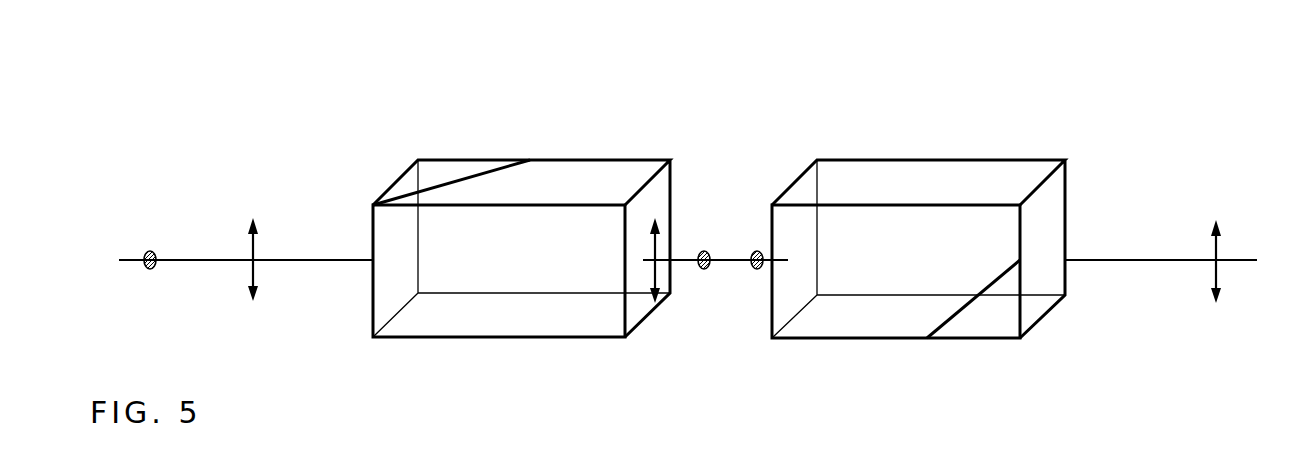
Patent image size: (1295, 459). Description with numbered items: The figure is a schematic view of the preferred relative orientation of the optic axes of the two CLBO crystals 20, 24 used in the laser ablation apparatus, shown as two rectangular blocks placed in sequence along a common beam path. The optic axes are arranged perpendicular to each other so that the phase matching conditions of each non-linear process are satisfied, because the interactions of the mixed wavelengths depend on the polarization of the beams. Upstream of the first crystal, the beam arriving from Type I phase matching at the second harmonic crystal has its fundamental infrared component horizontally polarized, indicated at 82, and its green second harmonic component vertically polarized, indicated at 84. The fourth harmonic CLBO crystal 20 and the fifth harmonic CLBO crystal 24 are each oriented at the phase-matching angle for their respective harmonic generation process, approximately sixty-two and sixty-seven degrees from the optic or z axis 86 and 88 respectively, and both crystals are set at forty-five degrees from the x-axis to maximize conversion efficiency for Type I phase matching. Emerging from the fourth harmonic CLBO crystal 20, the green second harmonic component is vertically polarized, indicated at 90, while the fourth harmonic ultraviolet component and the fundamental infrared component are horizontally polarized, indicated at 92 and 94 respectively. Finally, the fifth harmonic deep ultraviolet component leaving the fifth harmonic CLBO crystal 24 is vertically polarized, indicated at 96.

The 4th harmonic CLBO crystal 20 is at (548, 160).
The 5th harmonic CLBO crystal 24 is at (885, 160).
The horizontally polarized 1064 nm beam 82 is at (151, 270).
The vertically polarized 532 nm beam 84 is at (257, 292).
The optic axis of 4th harmonic crystal 86 is at (447, 180).
The optic axis of 5th harmonic crystal 88 is at (975, 302).
The vertically polarized 532 nm component 90 is at (661, 222).
The horizontally polarized 266 nm component 92 is at (707, 270).
The horizontally polarized 1064 nm component 94 is at (757, 250).
The vertically polarized 213 nm component 96 is at (1221, 295).